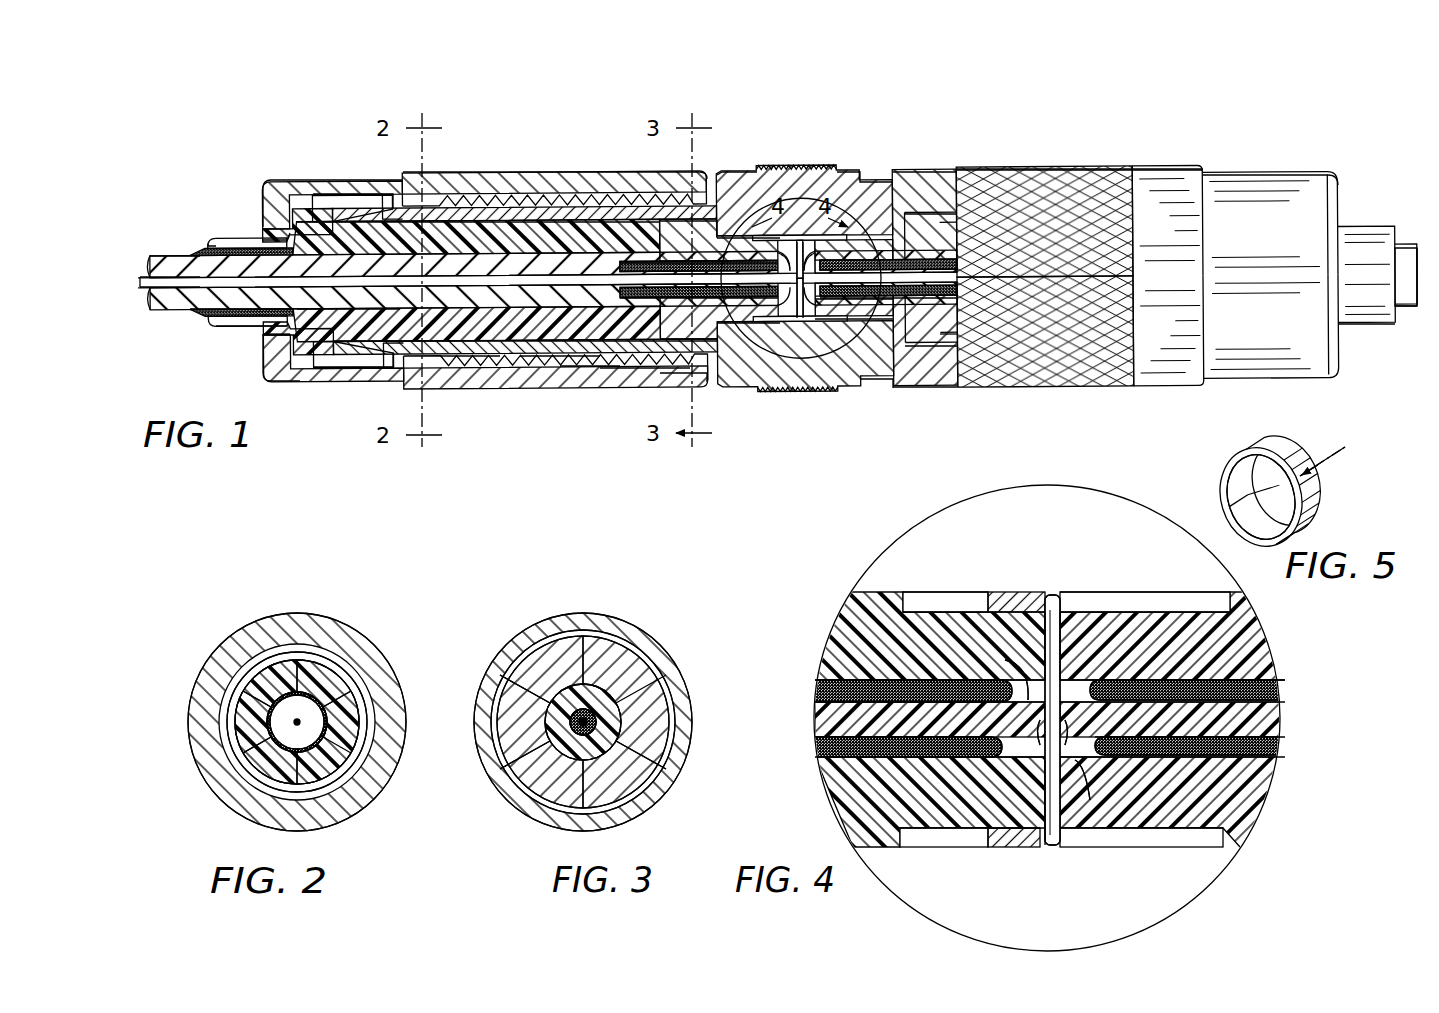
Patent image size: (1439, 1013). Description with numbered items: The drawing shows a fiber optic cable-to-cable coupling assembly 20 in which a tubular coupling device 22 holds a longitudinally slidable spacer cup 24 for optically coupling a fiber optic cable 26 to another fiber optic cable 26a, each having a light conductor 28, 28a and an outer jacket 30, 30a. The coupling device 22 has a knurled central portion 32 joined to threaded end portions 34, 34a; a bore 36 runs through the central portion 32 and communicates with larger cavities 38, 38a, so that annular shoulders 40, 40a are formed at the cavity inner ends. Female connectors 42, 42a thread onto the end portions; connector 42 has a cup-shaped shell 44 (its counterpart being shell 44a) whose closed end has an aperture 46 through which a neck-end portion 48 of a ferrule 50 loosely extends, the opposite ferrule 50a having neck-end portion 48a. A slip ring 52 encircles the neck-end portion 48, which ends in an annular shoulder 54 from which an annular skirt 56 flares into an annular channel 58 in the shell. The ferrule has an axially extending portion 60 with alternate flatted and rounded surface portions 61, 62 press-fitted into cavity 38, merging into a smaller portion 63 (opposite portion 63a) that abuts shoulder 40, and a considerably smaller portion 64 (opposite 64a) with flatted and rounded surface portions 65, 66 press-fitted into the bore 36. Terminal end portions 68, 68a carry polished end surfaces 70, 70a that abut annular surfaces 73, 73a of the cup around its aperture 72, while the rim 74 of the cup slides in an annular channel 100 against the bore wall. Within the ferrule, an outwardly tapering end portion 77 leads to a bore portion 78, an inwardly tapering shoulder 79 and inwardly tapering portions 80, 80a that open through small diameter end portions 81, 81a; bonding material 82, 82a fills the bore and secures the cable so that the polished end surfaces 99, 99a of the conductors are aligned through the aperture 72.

In FIG. 1, the fiber optic cable-to-cable coupling assembly 20 is at (1048, 113).
In FIG. 1, the tubular coupling device 22 is at (840, 166).
In FIG. 1, the spacer cup 24 is at (798, 233).
In FIG. 4, the spacer cup 24 is at (1030, 850).
In FIG. 5, the spacer cup 24 is at (1325, 455).
In FIG. 1, the fiber optic cable 26 is at (143, 314).
In FIG. 1, the fiber optic cable 26a is at (1410, 240).
In FIG. 1, the light conductor 28 is at (142, 275).
In FIG. 2, the light conductor 28 is at (245, 665).
In FIG. 3, the light conductor 28 is at (560, 760).
In FIG. 4, the light conductor 28 is at (830, 718).
In FIG. 1, the light conductor 28a is at (968, 284).
In FIG. 4, the light conductor 28a is at (1270, 715).
In FIG. 1, the outer jacket 30 is at (162, 256).
In FIG. 2, the outer jacket 30 is at (292, 782).
In FIG. 1, the outer jacket 30a is at (1410, 302).
In FIG. 1, the central portion 32 is at (747, 176).
In FIG. 3, the central portion 32 is at (608, 640).
In FIG. 1, the end portion 34 is at (628, 374).
In FIG. 2, the end portion 34 is at (284, 652).
In FIG. 1, the end portion 34a is at (940, 378).
In FIG. 1, the bore 36 is at (716, 240).
In FIG. 4, the bore 36 is at (1102, 600).
In FIG. 1, the cavity 38 is at (592, 370).
In FIG. 1, the cavity 38a is at (950, 352).
In FIG. 1, the annular shoulder 40 is at (662, 378).
In FIG. 1, the annular shoulder 40a is at (952, 330).
In FIG. 1, the female connector 42 is at (477, 170).
In FIG. 1, the female connector 42a is at (1172, 168).
In FIG. 1, the cup-shaped shell 44 is at (292, 188).
In FIG. 2, the cup-shaped shell 44 is at (370, 640).
In FIG. 3, the cup-shaped shell 44 is at (640, 622).
In FIG. 1, the cup-shaped shell 44a is at (1312, 180).
In FIG. 1, the aperture 46 is at (262, 236).
In FIG. 1, the neck-end portion 48 is at (207, 235).
In FIG. 1, the neck-end portion 48a is at (1368, 324).
In FIG. 1, the ferrule 50 is at (506, 347).
In FIG. 2, the ferrule 50 is at (228, 732).
In FIG. 3, the ferrule 50 is at (540, 700).
In FIG. 4, the ferrule 50 is at (962, 605).
In FIG. 1, the ferrule 50a is at (883, 230).
In FIG. 4, the ferrule 50a is at (1130, 605).
In FIG. 1, the slip ring 52 is at (302, 386).
In FIG. 1, the annular shoulder 54 is at (268, 340).
In FIG. 1, the annular skirt 56 is at (368, 366).
In FIG. 1, the annular channel 58 is at (338, 193).
In FIG. 1, the axially extending portion 60 is at (472, 362).
In FIG. 2, the axially extending portion 60 is at (250, 736).
In FIG. 2, the flatted surface portion 61 is at (260, 640).
In FIG. 2, the rounded surface portion 62 is at (330, 650).
In FIG. 3, the rounded surface portion 62 is at (545, 728).
In FIG. 1, the portion 63 is at (556, 364).
In FIG. 1, the portion 63a is at (876, 250).
In FIG. 1, the portion 64 is at (688, 337).
In FIG. 3, the portion 64 is at (548, 714).
In FIG. 4, the portion 64 is at (850, 795).
In FIG. 1, the portion 64a is at (876, 362).
In FIG. 4, the portion 64a is at (1240, 822).
In FIG. 3, the flatted surface portion 65 is at (555, 690).
In FIG. 3, the rounded surface portion 66 is at (615, 695).
In FIG. 1, the terminal end portion 68 is at (737, 225).
In FIG. 4, the terminal end portion 68 is at (930, 630).
In FIG. 1, the terminal end portion 68a is at (850, 330).
In FIG. 4, the terminal end portion 68a is at (1180, 635).
In FIG. 1, the terminal end surface 70 is at (835, 322).
In FIG. 4, the terminal end surface 70 is at (1040, 640).
In FIG. 1, the polished end surface 70a is at (752, 322).
In FIG. 4, the polished end surface 70a is at (1062, 650).
In FIG. 4, the aperture 72 is at (1058, 830).
In FIG. 5, the aperture 72 is at (1268, 497).
In FIG. 4, the annular surface 73 is at (960, 830).
In FIG. 5, the annular surface 73 is at (1240, 475).
In FIG. 4, the opposing surface 73a is at (1110, 832).
In FIG. 5, the opposing surface 73a is at (1295, 445).
In FIG. 4, the rim 74 is at (1000, 838).
In FIG. 5, the rim 74 is at (1312, 512).
In FIG. 1, the outwardly tapering end portion 77 is at (232, 330).
In FIG. 1, the portion 78 is at (334, 302).
In FIG. 1, the shoulder 79 is at (612, 244).
In FIG. 1, the inwardly tapering portion 80 is at (652, 260).
In FIG. 4, the inwardly tapering portion 80 is at (830, 686).
In FIG. 1, the inwardly tapering portion 80a is at (963, 292).
In FIG. 4, the inwardly tapering portion 80a is at (1200, 700).
In FIG. 1, the small diameter end portion 81 is at (783, 257).
In FIG. 4, the small diameter end portion 81 is at (1000, 660).
In FIG. 1, the small diameter end portion 81a is at (812, 268).
In FIG. 4, the small diameter end portion 81a is at (1085, 745).
In FIG. 1, the bonding material 82 is at (205, 315).
In FIG. 2, the bonding material 82 is at (330, 786).
In FIG. 3, the bonding material 82 is at (600, 742).
In FIG. 4, the bonding material 82 is at (830, 745).
In FIG. 4, the bonding material 82a is at (1260, 745).
In FIG. 4, the polished end surface 99 is at (1035, 712).
In FIG. 4, the polished end surface 99a is at (1070, 705).
In FIG. 4, the annular channel 100 is at (935, 600).